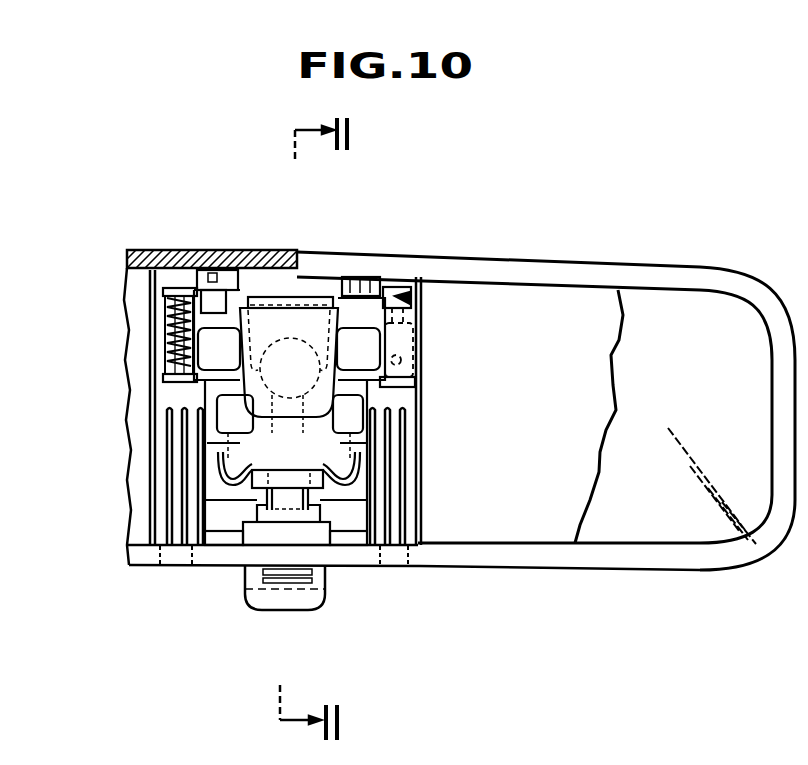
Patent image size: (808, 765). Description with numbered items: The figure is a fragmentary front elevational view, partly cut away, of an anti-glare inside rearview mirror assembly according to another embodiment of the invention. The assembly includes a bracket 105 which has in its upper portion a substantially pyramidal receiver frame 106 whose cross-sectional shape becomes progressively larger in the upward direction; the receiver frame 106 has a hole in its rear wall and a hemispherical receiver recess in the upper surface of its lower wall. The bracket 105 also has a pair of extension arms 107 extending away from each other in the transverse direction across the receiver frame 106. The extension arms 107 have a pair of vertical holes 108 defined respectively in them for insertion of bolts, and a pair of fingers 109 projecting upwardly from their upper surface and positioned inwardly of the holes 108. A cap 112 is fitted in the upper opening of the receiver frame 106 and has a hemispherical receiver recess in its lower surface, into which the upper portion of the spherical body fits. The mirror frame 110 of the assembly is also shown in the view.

The bracket 105 is at (373, 393).
The receiver frame 106 is at (421, 341).
The extension arms 107 is at (162, 310).
The vertical holes 108 is at (165, 382).
The fingers 109 is at (205, 270).
The mirror frame 110 is at (698, 287).
The cap 112 is at (306, 296).